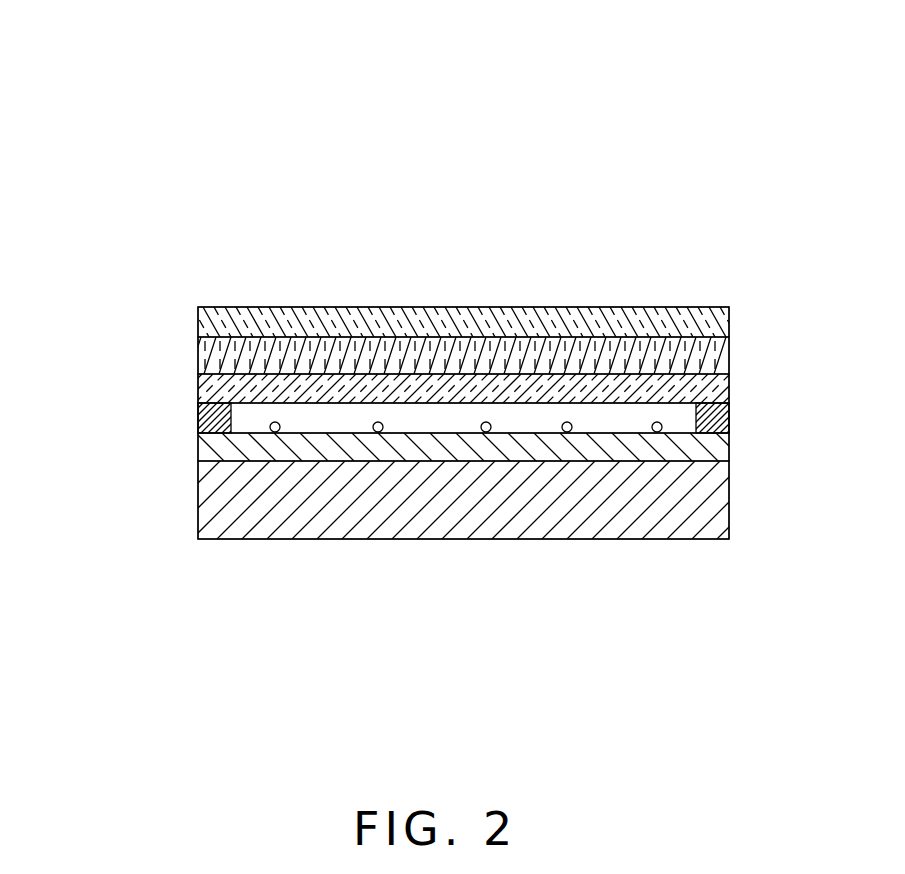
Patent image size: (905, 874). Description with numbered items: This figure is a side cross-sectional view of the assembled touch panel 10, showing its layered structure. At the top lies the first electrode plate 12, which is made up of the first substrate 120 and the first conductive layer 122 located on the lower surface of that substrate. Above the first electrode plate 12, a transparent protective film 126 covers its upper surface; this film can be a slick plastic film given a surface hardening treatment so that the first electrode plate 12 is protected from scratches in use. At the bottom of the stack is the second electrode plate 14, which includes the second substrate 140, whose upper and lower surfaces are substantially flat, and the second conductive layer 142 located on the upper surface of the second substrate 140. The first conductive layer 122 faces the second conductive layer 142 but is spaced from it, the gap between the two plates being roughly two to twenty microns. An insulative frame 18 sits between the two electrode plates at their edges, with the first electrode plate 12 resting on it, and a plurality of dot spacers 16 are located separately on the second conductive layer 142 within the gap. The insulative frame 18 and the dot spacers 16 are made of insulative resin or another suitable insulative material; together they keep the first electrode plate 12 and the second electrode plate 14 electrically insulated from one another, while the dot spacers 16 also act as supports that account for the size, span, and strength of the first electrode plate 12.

The touch panel 10 is at (452, 57).
The first electrode plate 12 is at (95, 337).
The transparent protective film 126 is at (215, 323).
The first substrate 120 is at (220, 355).
The first conductive layer 122 is at (215, 386).
The dot spacers 16 is at (265, 427).
The insulative frame 18 is at (715, 417).
The second electrode plate 14 is at (95, 433).
The second conductive layer 142 is at (220, 452).
The second substrate 140 is at (218, 513).